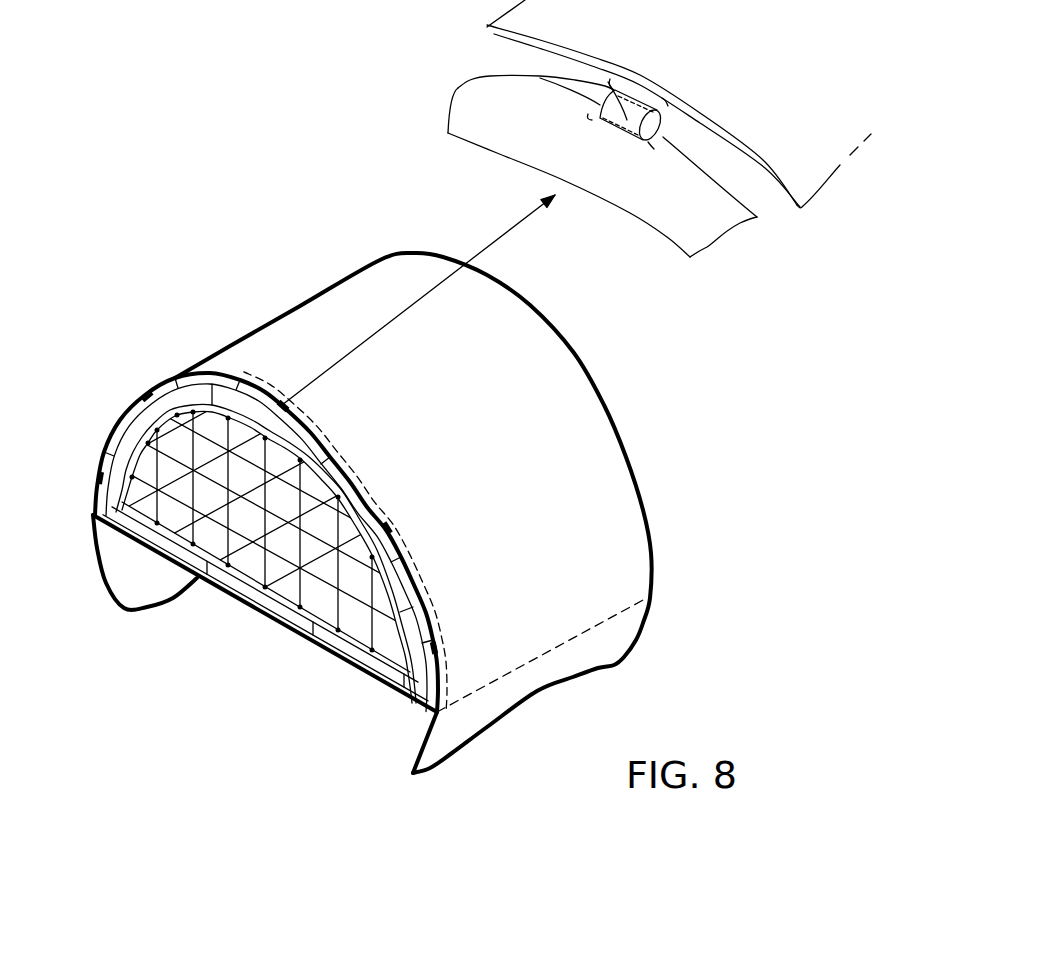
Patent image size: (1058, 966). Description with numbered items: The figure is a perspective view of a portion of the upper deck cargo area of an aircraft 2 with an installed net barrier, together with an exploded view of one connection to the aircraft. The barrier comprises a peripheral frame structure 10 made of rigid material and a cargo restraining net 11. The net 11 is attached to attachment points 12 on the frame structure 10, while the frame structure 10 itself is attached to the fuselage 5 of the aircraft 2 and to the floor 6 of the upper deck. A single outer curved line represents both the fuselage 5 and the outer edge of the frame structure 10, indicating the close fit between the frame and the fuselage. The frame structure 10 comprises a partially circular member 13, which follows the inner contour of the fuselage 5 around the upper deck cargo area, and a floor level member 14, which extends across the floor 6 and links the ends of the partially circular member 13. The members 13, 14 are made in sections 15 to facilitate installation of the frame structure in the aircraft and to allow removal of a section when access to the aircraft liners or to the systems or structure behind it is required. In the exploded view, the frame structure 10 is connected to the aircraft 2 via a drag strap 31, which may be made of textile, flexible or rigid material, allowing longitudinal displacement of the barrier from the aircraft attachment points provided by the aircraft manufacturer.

The aircraft 2 is at (597, 357).
The fuselage 5 is at (633, 477).
The floor 6 is at (338, 658).
The peripheral frame structure 10 is at (103, 496).
The cargo restraining net 11 is at (122, 452).
The attachment points 12 is at (127, 418).
The partially circular member 13 is at (165, 402).
The floor level member 14 is at (288, 618).
The sections 15 is at (228, 587).
The drag straps 31 is at (478, 75).